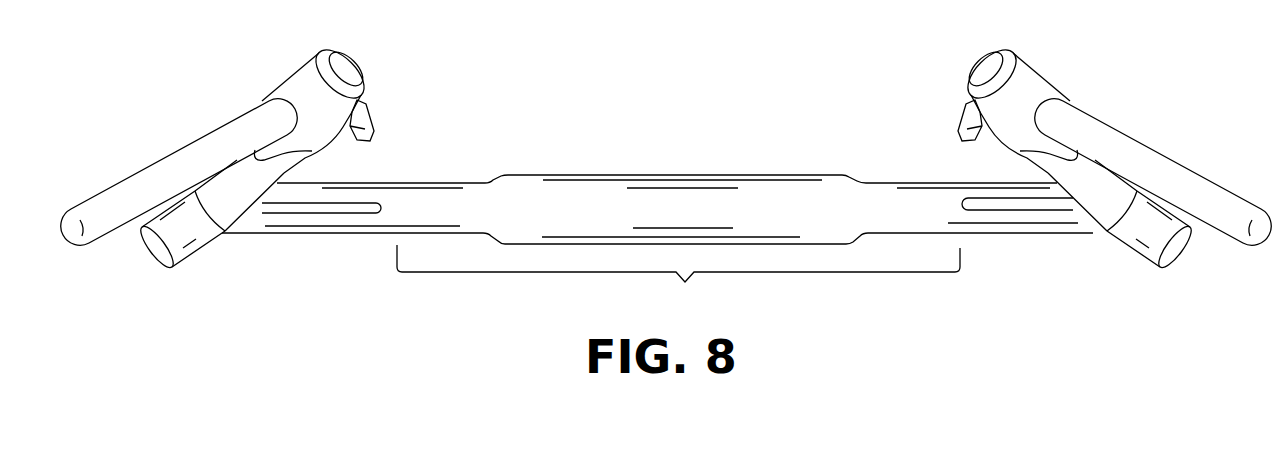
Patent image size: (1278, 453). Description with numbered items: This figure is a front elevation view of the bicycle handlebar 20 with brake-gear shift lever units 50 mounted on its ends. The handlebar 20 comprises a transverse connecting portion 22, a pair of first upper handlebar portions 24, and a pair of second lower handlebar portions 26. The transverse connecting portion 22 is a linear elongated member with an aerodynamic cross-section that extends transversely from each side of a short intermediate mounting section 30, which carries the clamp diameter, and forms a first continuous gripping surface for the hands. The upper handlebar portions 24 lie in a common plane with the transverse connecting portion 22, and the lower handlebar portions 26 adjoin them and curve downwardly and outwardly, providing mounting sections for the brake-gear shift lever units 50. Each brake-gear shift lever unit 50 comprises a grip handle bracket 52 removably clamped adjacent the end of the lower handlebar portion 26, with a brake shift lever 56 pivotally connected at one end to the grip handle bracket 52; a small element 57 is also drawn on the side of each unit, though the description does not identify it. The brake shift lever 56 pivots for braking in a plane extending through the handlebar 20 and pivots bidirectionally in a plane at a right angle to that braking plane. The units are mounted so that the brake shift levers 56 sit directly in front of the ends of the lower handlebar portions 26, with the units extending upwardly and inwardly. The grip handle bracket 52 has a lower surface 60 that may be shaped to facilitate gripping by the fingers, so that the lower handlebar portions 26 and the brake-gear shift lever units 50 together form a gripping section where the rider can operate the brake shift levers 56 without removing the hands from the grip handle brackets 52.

The handlebar 20 is at (660, 122).
The transverse connecting portion 22 is at (678, 278).
The first upper handlebar portions 24 is at (318, 234).
The second lower handlebar portions 26 is at (187, 253).
The intermediate mounting section 30 is at (685, 204).
The brake-gear shift lever unit 50 is at (285, 73).
The grip handle bracket 52 is at (238, 208).
The brake shift lever 56 is at (168, 173).
The lever 57 is at (364, 107).
The lower surface 60 is at (277, 165).